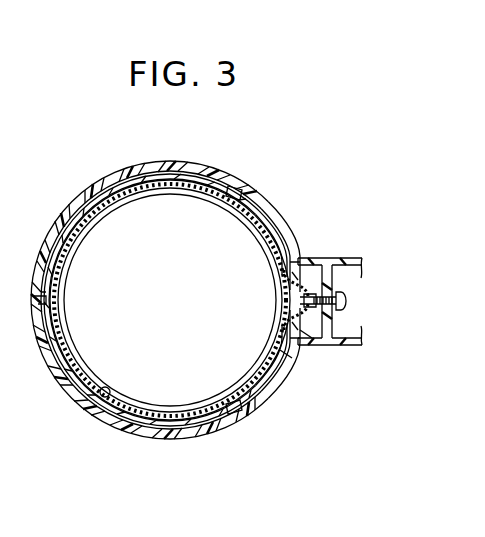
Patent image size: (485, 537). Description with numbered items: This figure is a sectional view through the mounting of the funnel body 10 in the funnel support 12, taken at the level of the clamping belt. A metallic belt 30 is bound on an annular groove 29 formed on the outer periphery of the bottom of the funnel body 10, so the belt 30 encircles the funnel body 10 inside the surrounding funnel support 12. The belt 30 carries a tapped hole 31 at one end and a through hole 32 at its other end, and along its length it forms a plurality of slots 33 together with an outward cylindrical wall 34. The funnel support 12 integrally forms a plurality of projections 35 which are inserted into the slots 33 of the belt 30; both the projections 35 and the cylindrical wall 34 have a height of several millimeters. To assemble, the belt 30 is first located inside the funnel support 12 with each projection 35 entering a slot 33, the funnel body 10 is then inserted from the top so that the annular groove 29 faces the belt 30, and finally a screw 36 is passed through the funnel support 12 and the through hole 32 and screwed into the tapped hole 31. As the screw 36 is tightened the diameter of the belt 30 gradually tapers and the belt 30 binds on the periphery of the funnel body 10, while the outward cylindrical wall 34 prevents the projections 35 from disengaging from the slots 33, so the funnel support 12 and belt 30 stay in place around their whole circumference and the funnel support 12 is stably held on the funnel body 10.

The funnel body 10 is at (250, 250).
The funnel support 12 is at (147, 440).
The annular groove 29 is at (103, 400).
The metallic belt 30 is at (286, 356).
The tapped hole 31 is at (318, 262).
The through hole 32 is at (314, 337).
The slots 33 is at (240, 196).
The outward cylindrical wall 34 is at (246, 226).
The projections 35 is at (233, 186).
The screw 36 is at (348, 303).